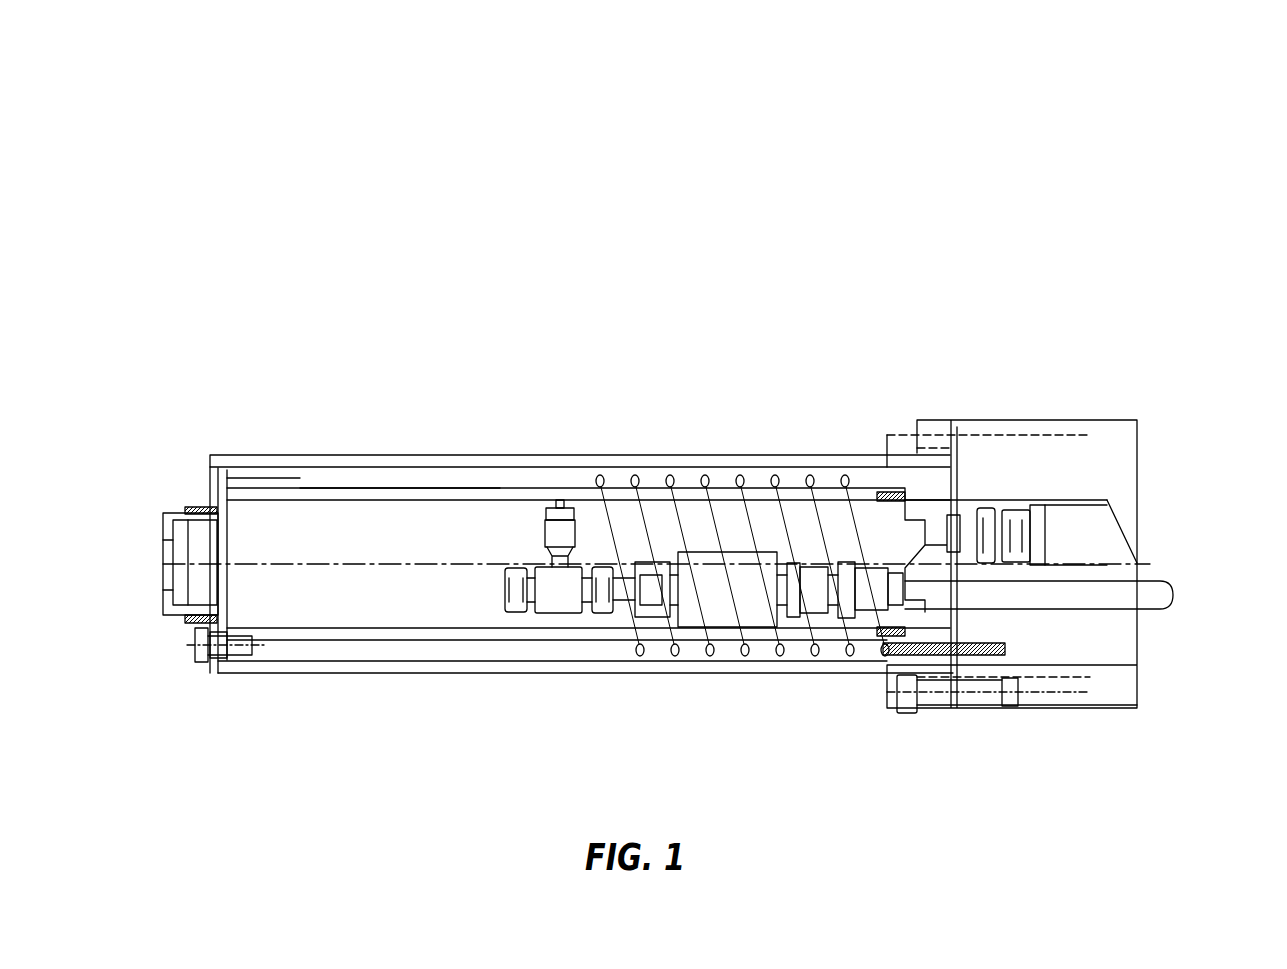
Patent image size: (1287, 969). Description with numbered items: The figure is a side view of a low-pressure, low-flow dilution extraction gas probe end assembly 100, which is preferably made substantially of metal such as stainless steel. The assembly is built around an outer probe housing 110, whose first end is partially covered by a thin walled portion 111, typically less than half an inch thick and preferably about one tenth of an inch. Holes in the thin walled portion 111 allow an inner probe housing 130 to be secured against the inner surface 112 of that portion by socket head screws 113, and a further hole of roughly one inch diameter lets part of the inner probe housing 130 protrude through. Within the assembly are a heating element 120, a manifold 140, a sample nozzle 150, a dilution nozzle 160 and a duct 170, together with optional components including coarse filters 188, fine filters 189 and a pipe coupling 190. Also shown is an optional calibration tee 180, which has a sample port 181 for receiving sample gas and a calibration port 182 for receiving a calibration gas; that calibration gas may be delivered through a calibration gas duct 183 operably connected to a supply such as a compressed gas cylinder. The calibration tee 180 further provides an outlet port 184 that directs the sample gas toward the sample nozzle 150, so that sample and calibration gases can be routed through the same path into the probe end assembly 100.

The probe end assembly 100 is at (372, 88).
The outer probe housing 110 is at (280, 675).
The thin walled portion 111 is at (210, 672).
The inner surface 112 is at (218, 478).
The socket head screws 113 is at (192, 635).
The heating element 120 is at (625, 555).
The inner probe housing 130 is at (383, 488).
The manifold 140 is at (880, 533).
The sample nozzle 150 is at (855, 500).
The dilution nozzle 160 is at (975, 505).
The duct 170 is at (1043, 612).
The calibration tee 180 is at (545, 595).
The sample port 181 is at (509, 568).
The calibration port 182 is at (546, 508).
The calibration gas duct 183 is at (1107, 500).
The outlet port 184 is at (602, 568).
The coarse filters 188 is at (165, 508).
The fine filters 189 is at (630, 613).
The pipe coupling 190 is at (1070, 418).